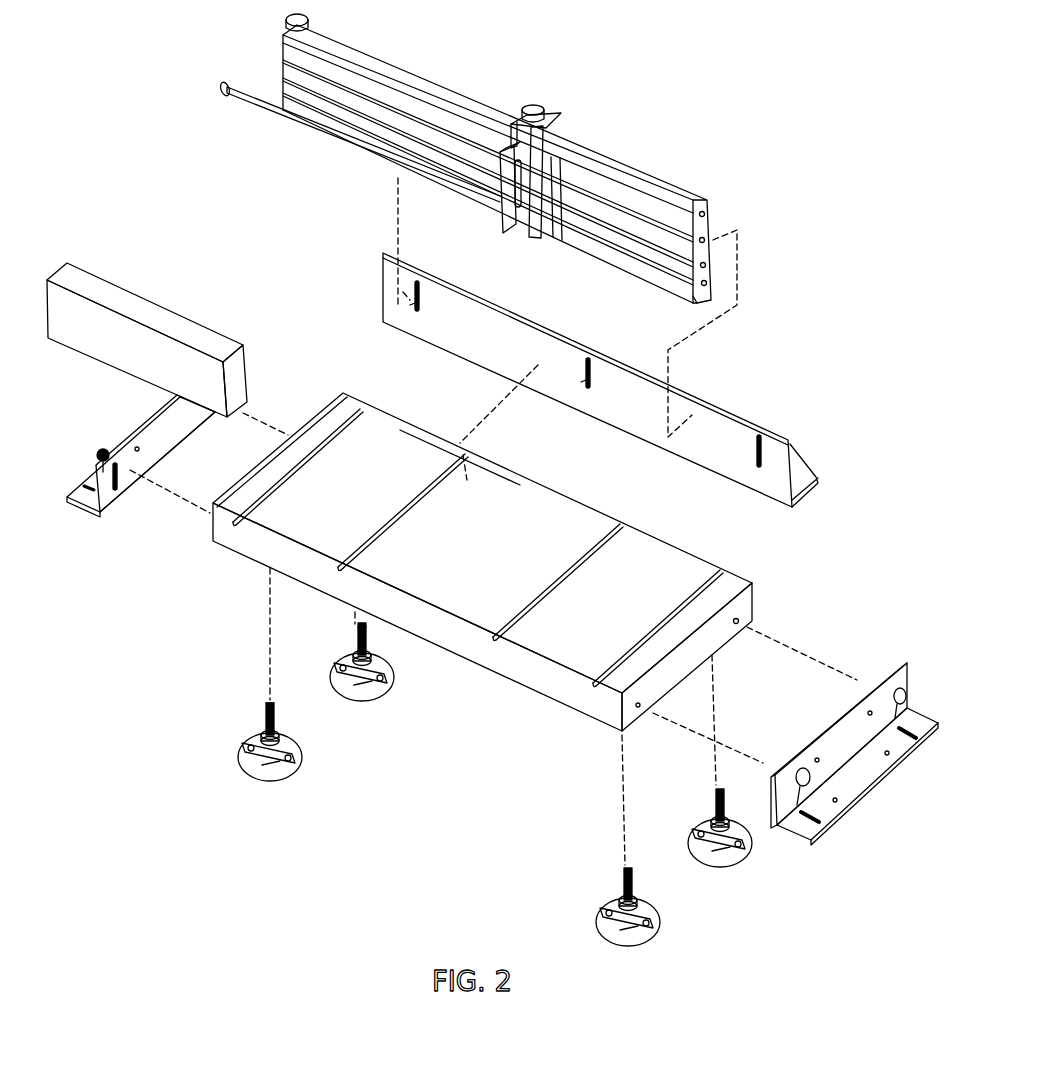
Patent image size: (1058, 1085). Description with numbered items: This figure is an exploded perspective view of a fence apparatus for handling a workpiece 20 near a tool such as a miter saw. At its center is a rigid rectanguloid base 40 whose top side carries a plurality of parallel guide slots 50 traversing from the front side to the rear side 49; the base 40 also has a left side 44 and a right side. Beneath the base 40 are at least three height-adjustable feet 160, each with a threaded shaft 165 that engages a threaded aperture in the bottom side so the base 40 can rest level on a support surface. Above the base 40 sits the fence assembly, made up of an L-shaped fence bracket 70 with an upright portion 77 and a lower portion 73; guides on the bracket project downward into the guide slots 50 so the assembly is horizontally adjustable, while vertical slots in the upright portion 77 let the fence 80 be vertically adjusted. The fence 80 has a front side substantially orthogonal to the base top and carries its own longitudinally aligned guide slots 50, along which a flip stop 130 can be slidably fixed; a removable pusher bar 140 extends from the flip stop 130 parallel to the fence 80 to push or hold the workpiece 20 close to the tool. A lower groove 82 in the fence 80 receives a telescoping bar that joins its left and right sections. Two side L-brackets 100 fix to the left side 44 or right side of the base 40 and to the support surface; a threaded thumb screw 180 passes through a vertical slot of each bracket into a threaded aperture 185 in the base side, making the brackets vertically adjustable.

The workpiece 20 is at (84, 288).
The rigid rectanguloid base 40 is at (493, 573).
The left side 44 is at (301, 392).
The rear side 49 is at (396, 395).
The guide slots 50 is at (634, 171).
The fence bracket 70 is at (653, 380).
The lower portion 73 is at (793, 486).
The upright portion 77 is at (718, 452).
The fence 80 is at (708, 234).
The lower groove 82 is at (706, 298).
The side L-brackets 100 is at (140, 473).
The flip stop 130 is at (556, 106).
The pusher bar 140 is at (260, 105).
The height-adjustable feet 160 is at (357, 702).
The threaded shaft 165 is at (360, 628).
The threaded thumb screw 180 is at (890, 6).
The threaded aperture 185 is at (737, 620).